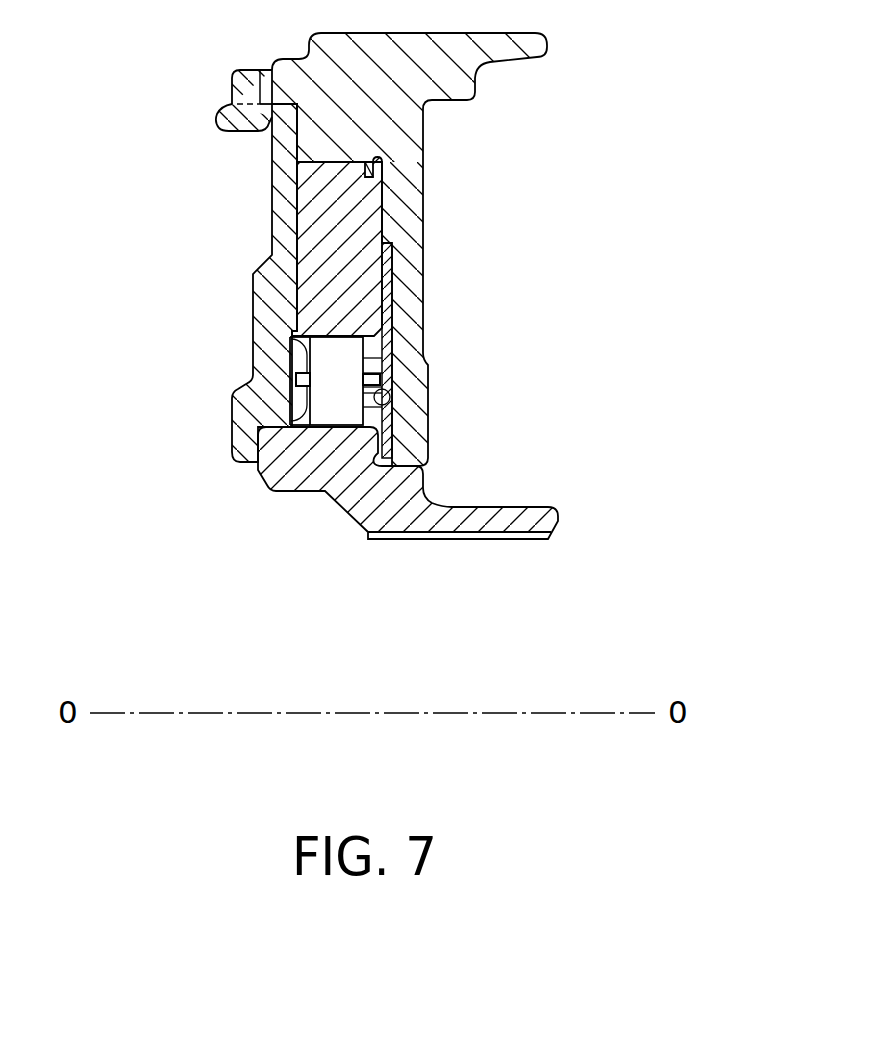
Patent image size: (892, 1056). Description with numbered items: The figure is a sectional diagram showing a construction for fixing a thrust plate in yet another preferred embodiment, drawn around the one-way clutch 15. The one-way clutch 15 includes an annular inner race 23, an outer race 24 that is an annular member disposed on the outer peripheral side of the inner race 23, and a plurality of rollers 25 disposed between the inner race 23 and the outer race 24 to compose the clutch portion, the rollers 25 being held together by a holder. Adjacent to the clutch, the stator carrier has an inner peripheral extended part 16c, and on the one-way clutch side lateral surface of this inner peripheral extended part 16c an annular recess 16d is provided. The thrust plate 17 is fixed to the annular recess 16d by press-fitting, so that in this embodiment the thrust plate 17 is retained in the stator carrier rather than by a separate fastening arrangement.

The inner race 23 is at (283, 466).
The outer race 24 is at (325, 213).
The rollers 25 is at (335, 376).
The one-way clutch 15 is at (370, 350).
The inner peripheral extended part 16c is at (407, 285).
The annular recess 16d is at (380, 405).
The thrust plate 17 is at (387, 258).